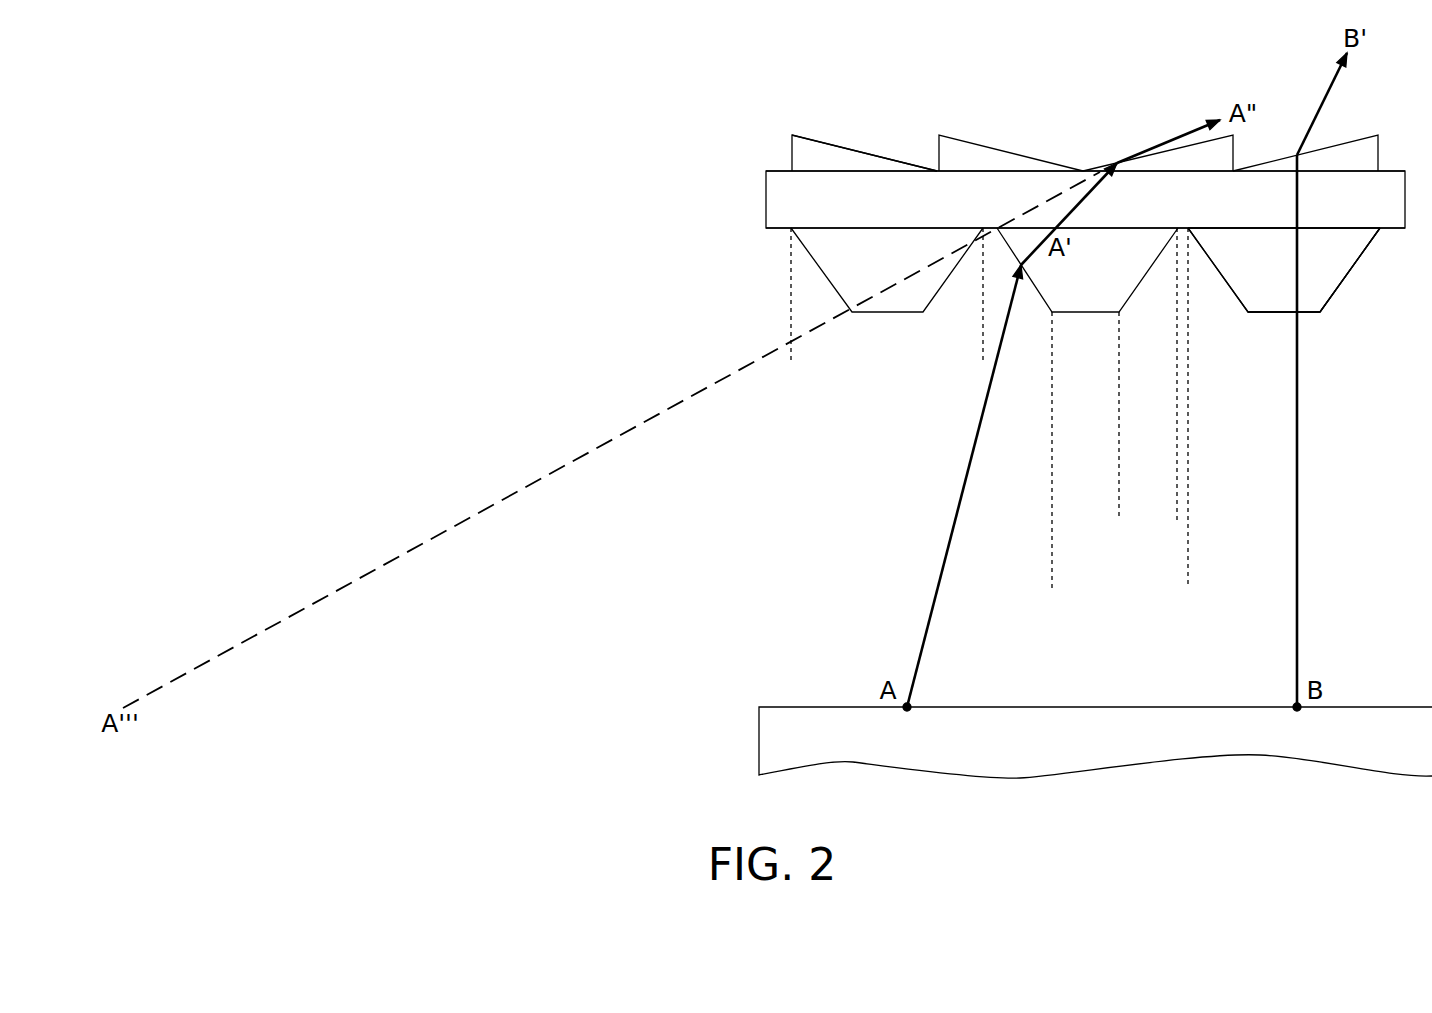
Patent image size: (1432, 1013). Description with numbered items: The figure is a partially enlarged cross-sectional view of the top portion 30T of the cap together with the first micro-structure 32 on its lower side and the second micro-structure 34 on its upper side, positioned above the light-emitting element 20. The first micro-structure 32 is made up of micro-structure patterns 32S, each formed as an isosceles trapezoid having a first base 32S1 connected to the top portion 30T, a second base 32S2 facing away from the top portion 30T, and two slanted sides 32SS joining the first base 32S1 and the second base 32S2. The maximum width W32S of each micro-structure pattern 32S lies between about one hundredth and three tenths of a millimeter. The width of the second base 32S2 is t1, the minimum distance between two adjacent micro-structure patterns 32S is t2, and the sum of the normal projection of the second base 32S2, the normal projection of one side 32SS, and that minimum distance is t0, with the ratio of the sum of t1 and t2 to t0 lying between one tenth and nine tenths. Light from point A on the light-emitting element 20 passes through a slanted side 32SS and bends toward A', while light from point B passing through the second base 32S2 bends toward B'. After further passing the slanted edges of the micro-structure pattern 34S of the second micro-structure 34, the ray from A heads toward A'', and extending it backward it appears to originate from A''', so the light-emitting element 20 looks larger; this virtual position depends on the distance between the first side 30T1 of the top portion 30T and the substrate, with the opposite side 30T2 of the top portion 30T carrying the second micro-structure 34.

The light-emitting element 20 is at (770, 739).
The top portion of the cap 30T is at (777, 200).
The first side of the top portion 30T1 is at (777, 230).
The second surface of transparent layer 30T2 is at (777, 170).
The first micro-structure 32 is at (1378, 258).
The micro-structure pattern 32S is at (1310, 288).
The first base 32S1 is at (1330, 226).
The second base 32S2 is at (1272, 315).
The sides 32SS is at (1350, 272).
The second micro-structure 34 is at (948, 114).
The micro-structure pattern 34S is at (810, 152).
The maximum width of each micro-structure pattern W32S is at (791, 355).
The sum distance t0 is at (1188, 578).
The width of the second base t1 is at (1119, 511).
The minimum distance between two adjacent micro-structure patterns t2 is at (1227, 511).